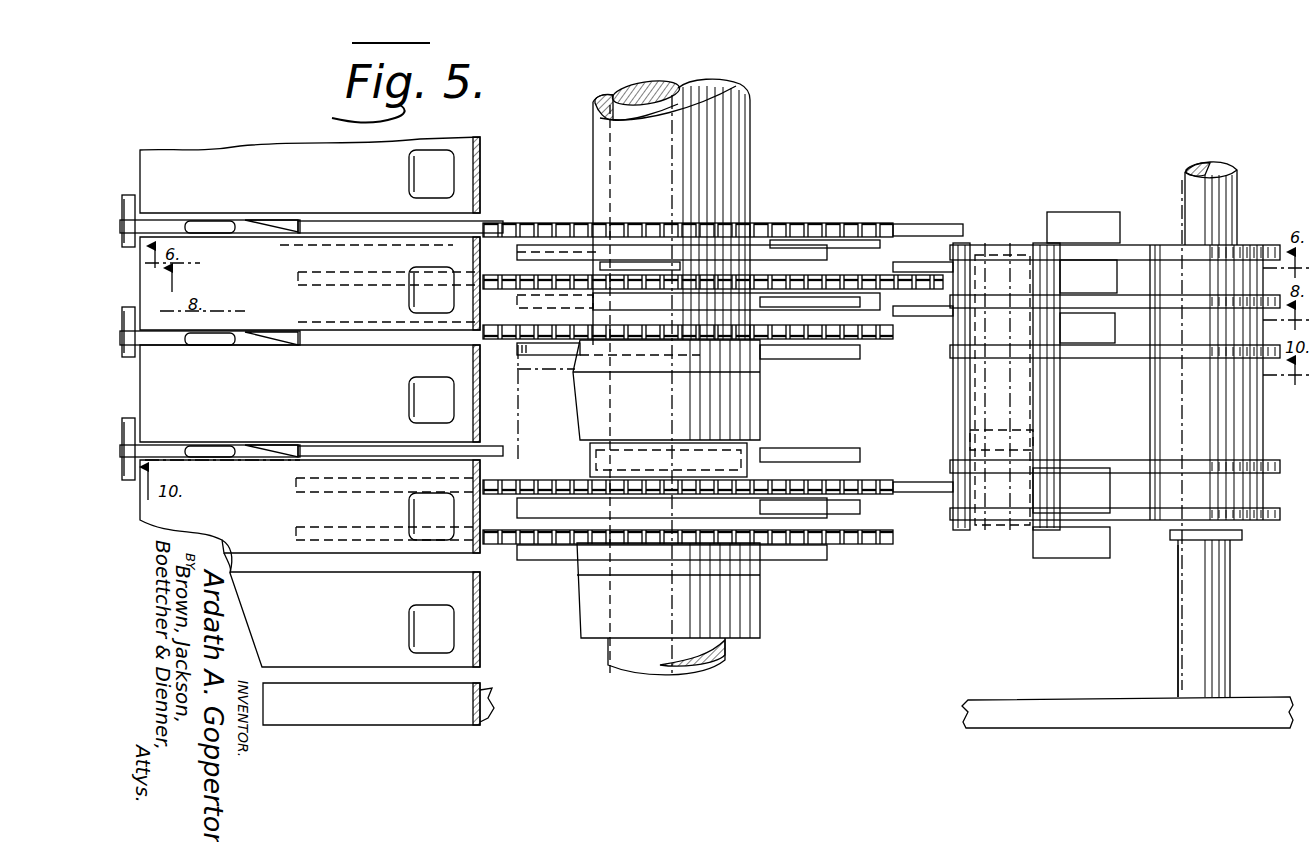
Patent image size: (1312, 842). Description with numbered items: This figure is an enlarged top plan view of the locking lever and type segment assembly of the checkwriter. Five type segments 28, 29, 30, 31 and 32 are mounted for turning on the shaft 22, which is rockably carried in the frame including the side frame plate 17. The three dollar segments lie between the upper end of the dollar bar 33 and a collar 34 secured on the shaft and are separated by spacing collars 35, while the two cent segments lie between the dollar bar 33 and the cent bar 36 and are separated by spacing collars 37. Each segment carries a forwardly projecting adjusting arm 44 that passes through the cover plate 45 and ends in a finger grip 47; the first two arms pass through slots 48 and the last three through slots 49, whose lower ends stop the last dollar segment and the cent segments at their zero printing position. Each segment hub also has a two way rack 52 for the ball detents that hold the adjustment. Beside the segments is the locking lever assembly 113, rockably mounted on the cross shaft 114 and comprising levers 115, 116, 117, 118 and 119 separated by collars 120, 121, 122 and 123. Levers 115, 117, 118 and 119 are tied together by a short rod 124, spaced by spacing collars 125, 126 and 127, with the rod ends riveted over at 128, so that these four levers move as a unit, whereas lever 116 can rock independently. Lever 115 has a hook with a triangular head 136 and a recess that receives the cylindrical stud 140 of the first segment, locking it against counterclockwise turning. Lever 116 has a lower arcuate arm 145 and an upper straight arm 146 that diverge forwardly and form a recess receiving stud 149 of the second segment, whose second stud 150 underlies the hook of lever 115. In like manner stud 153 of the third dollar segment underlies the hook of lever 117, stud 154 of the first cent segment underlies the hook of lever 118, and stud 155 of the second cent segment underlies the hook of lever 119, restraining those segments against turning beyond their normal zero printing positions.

The side frame plate 17 is at (1085, 712).
The shaft 22 is at (630, 86).
The type segment 28 is at (537, 223).
The type segment 29 is at (503, 282).
The type segment 30 is at (688, 392).
The type segment 31 is at (688, 500).
The type segment 32 is at (513, 544).
The dollar bar 33 is at (580, 392).
The collar 34 is at (740, 170).
The spacing collar 35 is at (555, 260).
The cent bar 36 is at (582, 600).
The spacing collar 37 is at (590, 452).
The adjusting arm 44 is at (252, 233).
The cover plate 45 is at (218, 158).
The finger grip 47 is at (135, 200).
The slot 48 is at (282, 220).
The slot 49 is at (272, 455).
The two way rack 52 is at (845, 485).
The locking lever assembly 113 is at (867, 221).
The cross shaft 114 is at (1190, 620).
The lever 115 is at (1088, 276).
The lever 116 is at (1087, 328).
The lever 117 is at (1150, 355).
The lever 118 is at (1133, 464).
The lever 119 is at (1130, 520).
The collar 120 is at (1160, 265).
The collar 121 is at (1160, 315).
The collar 122 is at (1160, 410).
The collar 123 is at (1160, 495).
The short rod 124 is at (1176, 262).
The spacing collar 125 is at (1072, 262).
The spacing collar 126 is at (1058, 398).
The spacing collar 127 is at (1071, 490).
The riveted end 128 is at (997, 250).
The triangular head 136 is at (540, 250).
The cylindrical stud 140 is at (893, 262).
The lower arcuate arm 145 is at (630, 274).
The upper arm 146 is at (735, 300).
The cylindrical stud 149 is at (920, 316).
The cylindrical stud 150 is at (822, 250).
The stud 153 is at (785, 360).
The stud 154 is at (778, 450).
The stud 155 is at (770, 513).